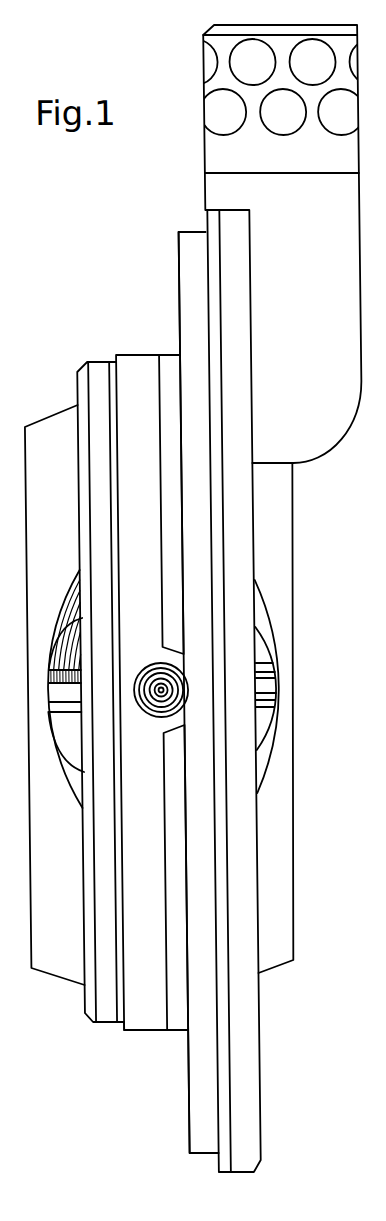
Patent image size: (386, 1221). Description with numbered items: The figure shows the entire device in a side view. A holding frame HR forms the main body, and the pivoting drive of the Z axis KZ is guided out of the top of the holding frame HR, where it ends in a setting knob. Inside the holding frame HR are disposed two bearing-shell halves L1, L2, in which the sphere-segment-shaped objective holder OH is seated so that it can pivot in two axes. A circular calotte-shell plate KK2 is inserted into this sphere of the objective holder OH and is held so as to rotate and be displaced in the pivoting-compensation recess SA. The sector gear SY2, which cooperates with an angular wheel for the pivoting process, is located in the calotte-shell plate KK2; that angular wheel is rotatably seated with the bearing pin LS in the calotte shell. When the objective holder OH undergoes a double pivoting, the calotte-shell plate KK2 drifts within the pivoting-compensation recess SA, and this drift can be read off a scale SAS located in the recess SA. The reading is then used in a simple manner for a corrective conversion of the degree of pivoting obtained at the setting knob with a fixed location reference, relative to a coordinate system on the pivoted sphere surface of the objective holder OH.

The pivoting drive of the Z axis KZ is at (225, 156).
The holding frame HR is at (217, 1116).
The objective holder OH is at (54, 954).
The bearing-shell half L1 is at (171, 373).
The bearing-shell half L2 is at (103, 373).
The bearing pin LS is at (175, 688).
The pivoting-compensation recess SA is at (263, 758).
The calotte-shell plate KK2 is at (257, 718).
The sector gear SY2 is at (63, 679).
The scale SAS is at (70, 602).